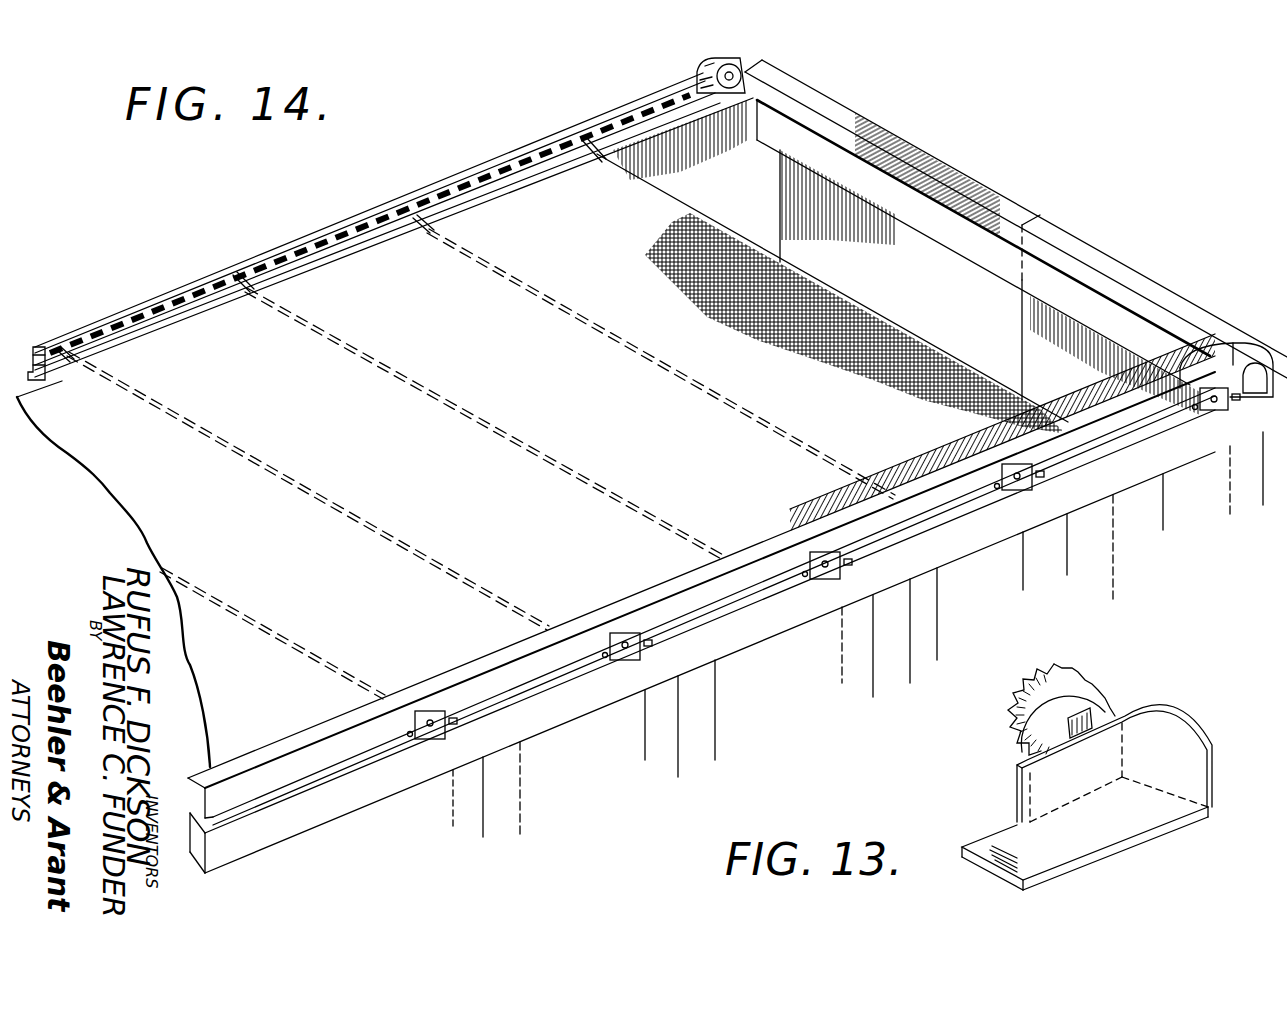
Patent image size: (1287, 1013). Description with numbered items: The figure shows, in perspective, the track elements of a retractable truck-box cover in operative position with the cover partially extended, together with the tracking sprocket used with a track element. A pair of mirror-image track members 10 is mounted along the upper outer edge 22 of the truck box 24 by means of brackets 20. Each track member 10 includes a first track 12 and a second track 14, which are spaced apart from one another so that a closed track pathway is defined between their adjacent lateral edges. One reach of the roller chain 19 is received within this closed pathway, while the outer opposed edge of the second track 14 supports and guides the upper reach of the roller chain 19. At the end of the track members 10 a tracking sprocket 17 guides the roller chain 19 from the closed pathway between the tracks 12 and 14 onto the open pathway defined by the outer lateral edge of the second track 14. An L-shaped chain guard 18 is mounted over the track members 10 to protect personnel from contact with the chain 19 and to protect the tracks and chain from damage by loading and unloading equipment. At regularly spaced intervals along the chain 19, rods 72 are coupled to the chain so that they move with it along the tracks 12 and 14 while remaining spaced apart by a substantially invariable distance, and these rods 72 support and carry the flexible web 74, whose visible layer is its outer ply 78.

In FIG. 14, the track members 10 is at (498, 150).
In FIG. 14, the first track 12 is at (60, 380).
In FIG. 14, the second track 14 is at (50, 358).
In FIG. 14, the tracking sprocket 17 is at (748, 74).
In FIG. 13, the tracking sprocket 17 is at (1087, 680).
In FIG. 14, the L-shaped chain guard 18 is at (86, 330).
In FIG. 14, the roller chain 19 is at (185, 320).
In FIG. 14, the brackets 20 is at (430, 740).
In FIG. 14, the upper outer edge 22 is at (620, 150).
In FIG. 14, the truck box 24 is at (918, 140).
In FIG. 14, the rod 72 is at (455, 405).
In FIG. 14, the flexible web 74 is at (808, 267).
In FIG. 14, the outer ply 78 is at (900, 330).